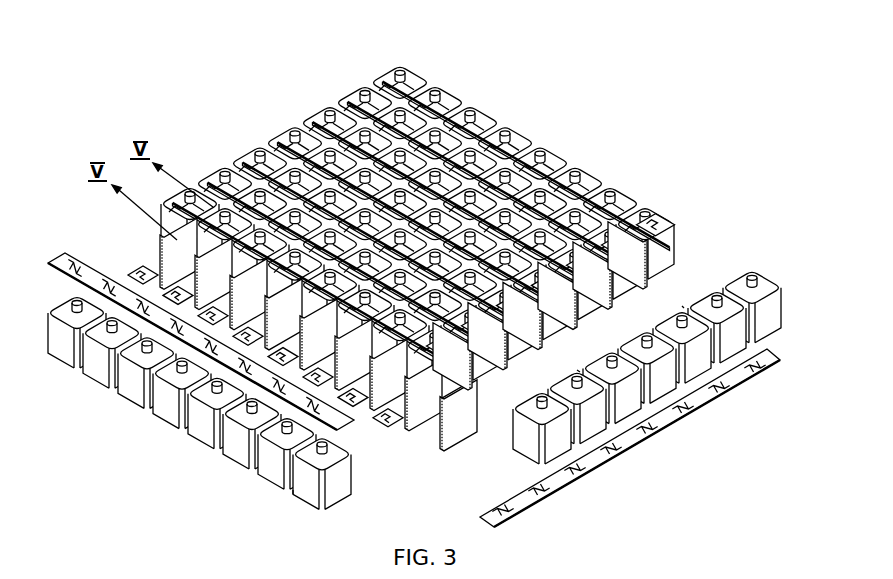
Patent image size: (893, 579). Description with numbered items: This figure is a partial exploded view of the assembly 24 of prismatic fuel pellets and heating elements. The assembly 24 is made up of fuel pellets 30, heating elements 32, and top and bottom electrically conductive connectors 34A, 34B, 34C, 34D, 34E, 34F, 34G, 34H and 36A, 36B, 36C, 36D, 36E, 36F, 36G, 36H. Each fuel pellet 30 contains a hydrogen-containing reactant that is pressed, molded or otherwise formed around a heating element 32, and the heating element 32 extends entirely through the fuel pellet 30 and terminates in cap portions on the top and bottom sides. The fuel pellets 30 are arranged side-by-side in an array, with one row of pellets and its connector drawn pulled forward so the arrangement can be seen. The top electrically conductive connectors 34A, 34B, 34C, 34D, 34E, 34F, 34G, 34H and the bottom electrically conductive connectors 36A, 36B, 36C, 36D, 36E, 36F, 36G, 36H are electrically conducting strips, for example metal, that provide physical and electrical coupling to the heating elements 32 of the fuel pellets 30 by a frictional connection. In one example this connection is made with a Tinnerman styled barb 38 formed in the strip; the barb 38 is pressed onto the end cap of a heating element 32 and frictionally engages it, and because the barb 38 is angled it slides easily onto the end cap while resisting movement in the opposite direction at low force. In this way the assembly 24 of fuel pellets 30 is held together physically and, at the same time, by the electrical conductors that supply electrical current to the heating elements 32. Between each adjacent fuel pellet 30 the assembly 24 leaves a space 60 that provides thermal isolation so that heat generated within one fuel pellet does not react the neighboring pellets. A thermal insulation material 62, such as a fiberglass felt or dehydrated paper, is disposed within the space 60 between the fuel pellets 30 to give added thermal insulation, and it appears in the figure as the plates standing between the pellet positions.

The assembly 24 is at (365, 282).
The fuel pellet 30 is at (338, 498).
The heating element 32 is at (330, 447).
The top electrically conductive connector 34A is at (55, 259).
The top electrically conductive connector 34B is at (172, 197).
The top electrically conductive connector 34C is at (207, 174).
The top electrically conductive connector 34D is at (242, 152).
The top electrically conductive connector 34E is at (277, 129).
The top electrically conductive connector 34F is at (312, 108).
The top electrically conductive connector 34G is at (347, 86).
The top electrically conductive connector 34H is at (392, 74).
The bottom electrically conductive connector 36A is at (140, 272).
The bottom electrically conductive connector 36B is at (172, 299).
The bottom electrically conductive connector 36C is at (207, 320).
The bottom electrically conductive connector 36D is at (242, 340).
The bottom electrically conductive connector 36E is at (277, 361).
The bottom electrically conductive connector 36F is at (312, 381).
The bottom electrically conductive connector 36G is at (347, 401).
The bottom electrically conductive connector 36H is at (480, 522).
The Tinnerman styled barb 38 is at (345, 420).
The space 60 is at (292, 497).
The thermal insulation material 62 is at (171, 233).